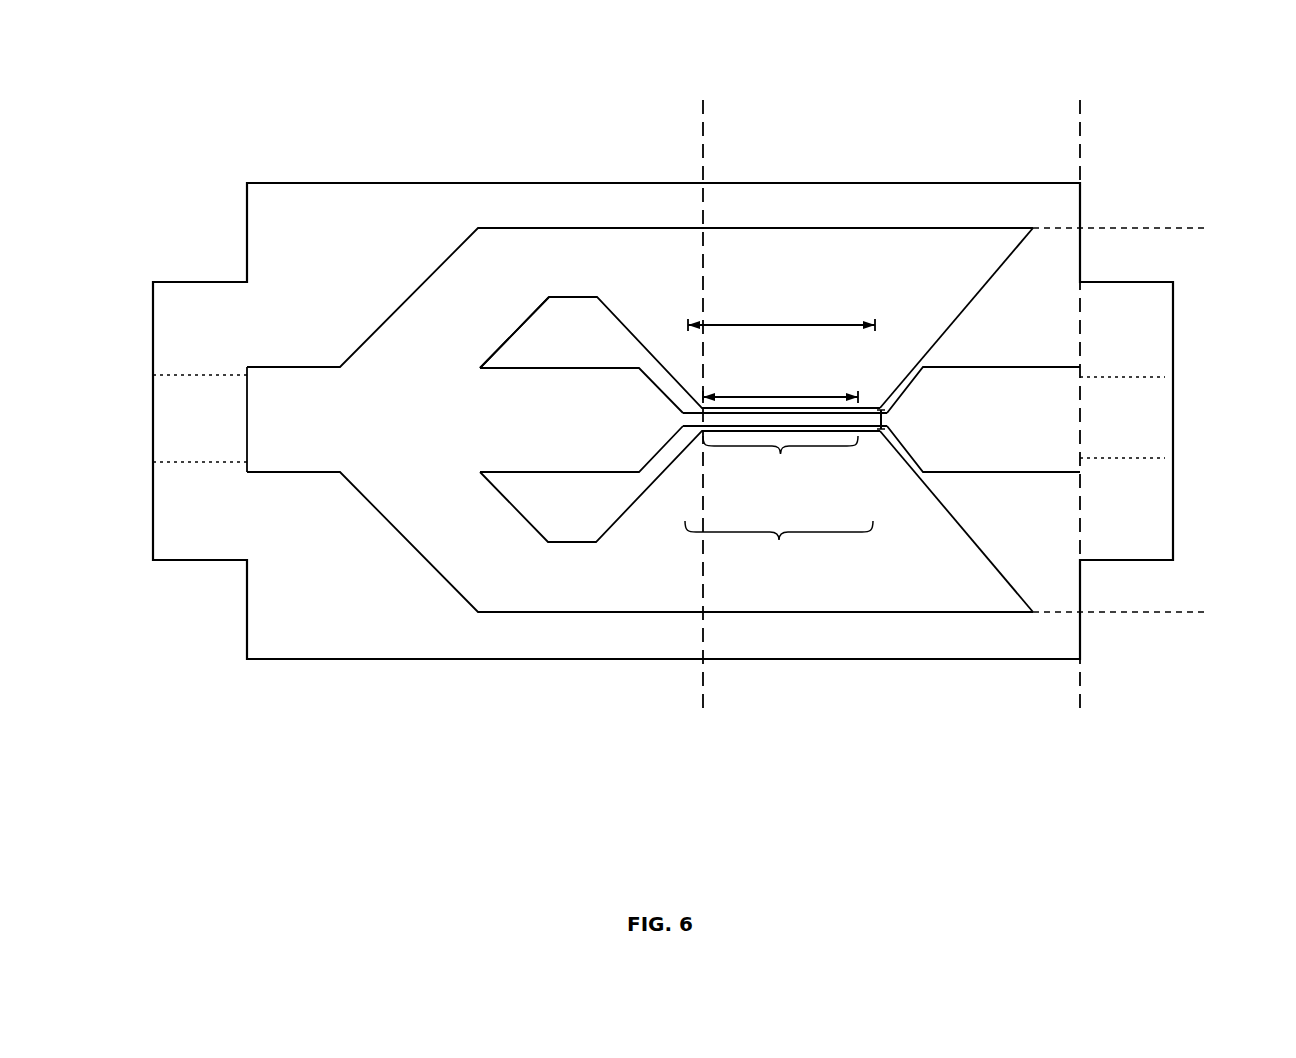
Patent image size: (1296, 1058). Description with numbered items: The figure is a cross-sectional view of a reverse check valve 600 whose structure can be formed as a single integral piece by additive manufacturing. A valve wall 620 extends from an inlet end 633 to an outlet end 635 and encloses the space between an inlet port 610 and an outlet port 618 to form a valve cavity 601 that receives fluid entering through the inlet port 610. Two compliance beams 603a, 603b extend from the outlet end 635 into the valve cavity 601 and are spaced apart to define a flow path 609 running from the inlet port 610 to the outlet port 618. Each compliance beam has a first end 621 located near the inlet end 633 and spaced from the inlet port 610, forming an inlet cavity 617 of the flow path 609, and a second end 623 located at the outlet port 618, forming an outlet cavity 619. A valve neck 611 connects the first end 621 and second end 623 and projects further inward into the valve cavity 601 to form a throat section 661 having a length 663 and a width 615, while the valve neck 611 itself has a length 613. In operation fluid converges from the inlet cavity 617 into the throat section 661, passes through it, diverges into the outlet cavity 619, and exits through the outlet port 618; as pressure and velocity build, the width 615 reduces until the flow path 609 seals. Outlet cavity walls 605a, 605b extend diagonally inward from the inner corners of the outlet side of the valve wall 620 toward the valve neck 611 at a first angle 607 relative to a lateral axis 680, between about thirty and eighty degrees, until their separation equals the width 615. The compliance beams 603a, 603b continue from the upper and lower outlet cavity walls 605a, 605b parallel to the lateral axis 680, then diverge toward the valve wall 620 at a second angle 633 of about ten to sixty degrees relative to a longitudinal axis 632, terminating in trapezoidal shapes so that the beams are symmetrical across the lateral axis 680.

The reverse check valve 600 is at (1280, 39).
The valve cavity 601 is at (827, 292).
The compliance beam 603a is at (575, 290).
The compliance beam 603b is at (575, 548).
The upper outlet cavity wall 605a is at (900, 377).
The lower outlet cavity wall 605b is at (920, 478).
The first angle 607 is at (1003, 238).
The flow path 609 is at (683, 420).
The inlet port 610 is at (170, 378).
The valve neck 611 is at (780, 465).
The length 613 is at (758, 392).
The width 615 is at (888, 418).
The inlet cavity 617 is at (531, 437).
The outlet port 618 is at (1160, 377).
The outlet cavity 619 is at (1078, 440).
The valve wall 620 is at (333, 183).
The first end 621 is at (520, 318).
The second end 623 is at (993, 512).
The longitudinal axis 632 is at (893, 391).
The inlet end 633 is at (668, 367).
The outlet end 635 is at (1033, 675).
The throat section 661 is at (779, 544).
The length 663 is at (738, 322).
The lateral axis 680 is at (1142, 420).